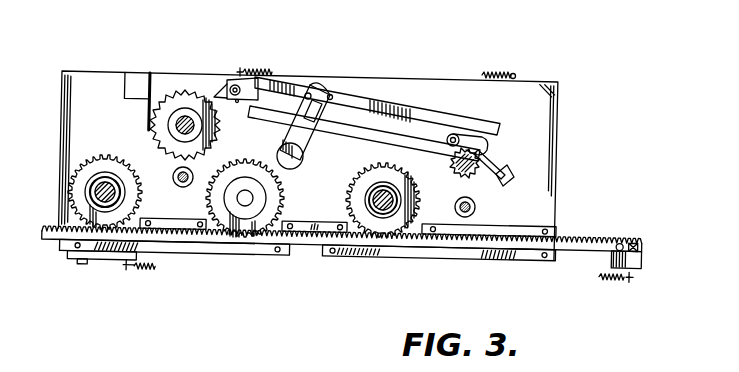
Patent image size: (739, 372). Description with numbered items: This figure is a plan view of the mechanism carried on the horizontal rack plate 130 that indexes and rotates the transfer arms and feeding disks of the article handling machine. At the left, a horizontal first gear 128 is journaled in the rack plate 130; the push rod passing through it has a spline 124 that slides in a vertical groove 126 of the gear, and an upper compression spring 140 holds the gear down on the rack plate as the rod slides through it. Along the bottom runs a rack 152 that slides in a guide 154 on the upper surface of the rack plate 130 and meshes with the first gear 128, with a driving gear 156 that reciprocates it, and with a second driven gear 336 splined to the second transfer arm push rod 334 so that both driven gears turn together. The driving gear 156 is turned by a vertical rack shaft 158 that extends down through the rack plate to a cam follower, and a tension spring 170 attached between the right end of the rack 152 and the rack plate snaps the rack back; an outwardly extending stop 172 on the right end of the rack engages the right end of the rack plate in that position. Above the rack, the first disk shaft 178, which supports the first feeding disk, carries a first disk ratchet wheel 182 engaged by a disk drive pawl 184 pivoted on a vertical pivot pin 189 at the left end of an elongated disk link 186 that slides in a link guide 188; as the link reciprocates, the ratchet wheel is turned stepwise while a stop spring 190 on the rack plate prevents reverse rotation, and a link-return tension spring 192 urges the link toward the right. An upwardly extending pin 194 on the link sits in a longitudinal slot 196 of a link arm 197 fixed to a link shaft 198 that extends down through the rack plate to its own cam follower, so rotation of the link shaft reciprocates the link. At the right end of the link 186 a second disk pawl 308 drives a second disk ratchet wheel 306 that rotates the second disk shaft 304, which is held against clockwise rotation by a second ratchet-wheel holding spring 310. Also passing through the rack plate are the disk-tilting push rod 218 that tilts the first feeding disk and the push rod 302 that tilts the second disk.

The spline 124 is at (80, 193).
The vertical groove 126 is at (97, 207).
The first gear 128 is at (90, 163).
The rack plate 130 is at (560, 85).
The upper compression spring 140 is at (120, 184).
The rack 152 is at (307, 236).
The guide 154 is at (566, 214).
The driving gear 156 is at (250, 164).
The rack shaft 158 is at (246, 204).
The tension spring 170 is at (152, 266).
The stop 172 is at (642, 246).
The first disk shaft 178 is at (178, 125).
The first disk ratchet wheel 182 is at (190, 90).
The disk drive pawl 184 is at (217, 98).
The disk link 186 is at (414, 130).
The link guide 188 is at (399, 98).
The vertical pivot pin 189 is at (237, 103).
The stop spring 190 is at (148, 108).
The link-return tension spring 192 is at (263, 70).
The pin 194 is at (297, 86).
The longitudinal slot 196 is at (320, 100).
The link arm 197 is at (333, 96).
The link shaft 198 is at (295, 168).
The disk-tilting push rod 218 is at (176, 170).
The push rod 302 is at (477, 207).
The second disk shaft 304 is at (490, 150).
The second disk ratchet wheel 306 is at (456, 170).
The second disk pawl 308 is at (458, 134).
The second ratchet-wheel holding spring 310 is at (505, 158).
The second transfer arm push rod 334 is at (380, 201).
The second driven gear 336 is at (371, 192).